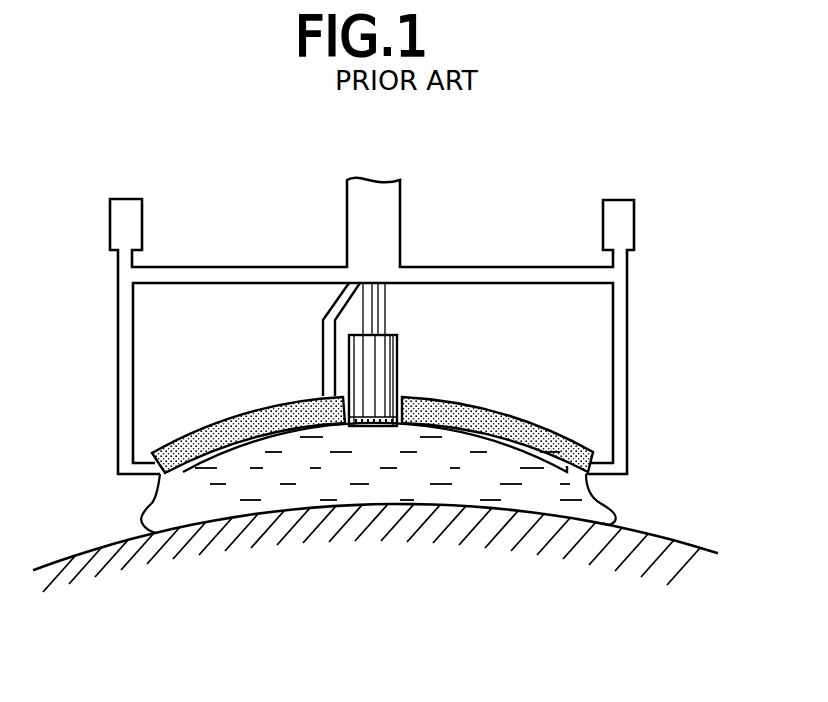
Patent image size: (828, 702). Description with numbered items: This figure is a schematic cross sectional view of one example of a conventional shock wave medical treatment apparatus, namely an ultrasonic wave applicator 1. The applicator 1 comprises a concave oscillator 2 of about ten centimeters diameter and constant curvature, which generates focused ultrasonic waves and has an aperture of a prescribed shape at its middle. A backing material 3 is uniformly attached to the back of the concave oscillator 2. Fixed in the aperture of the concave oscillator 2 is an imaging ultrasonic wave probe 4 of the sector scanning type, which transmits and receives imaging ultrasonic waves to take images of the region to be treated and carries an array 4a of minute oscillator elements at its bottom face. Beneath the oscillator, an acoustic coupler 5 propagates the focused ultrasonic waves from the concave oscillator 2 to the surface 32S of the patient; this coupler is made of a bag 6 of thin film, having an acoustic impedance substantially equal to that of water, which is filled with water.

The ultrasonic wave applicator 1 is at (200, 398).
The concave oscillator 2 is at (513, 447).
The backing material 3 is at (477, 403).
The imaging ultrasonic wave probe 4 is at (360, 333).
The array of minute oscillator elements 4a is at (374, 412).
The acoustic coupler 5 is at (137, 505).
The bag 6 is at (613, 503).
The surface of a patient 32S is at (684, 541).